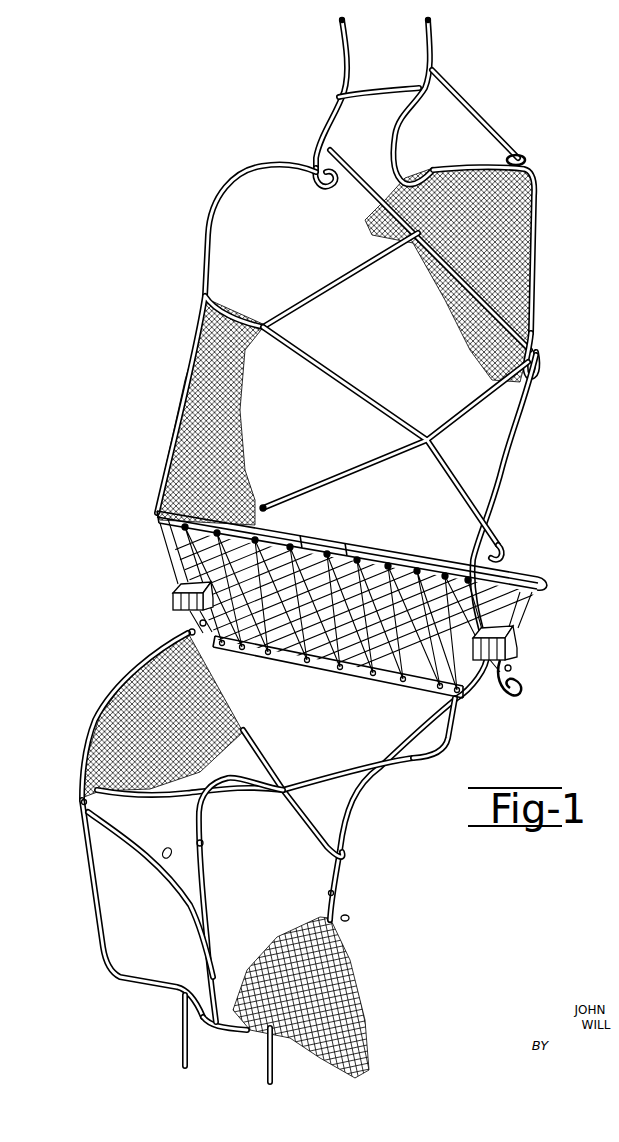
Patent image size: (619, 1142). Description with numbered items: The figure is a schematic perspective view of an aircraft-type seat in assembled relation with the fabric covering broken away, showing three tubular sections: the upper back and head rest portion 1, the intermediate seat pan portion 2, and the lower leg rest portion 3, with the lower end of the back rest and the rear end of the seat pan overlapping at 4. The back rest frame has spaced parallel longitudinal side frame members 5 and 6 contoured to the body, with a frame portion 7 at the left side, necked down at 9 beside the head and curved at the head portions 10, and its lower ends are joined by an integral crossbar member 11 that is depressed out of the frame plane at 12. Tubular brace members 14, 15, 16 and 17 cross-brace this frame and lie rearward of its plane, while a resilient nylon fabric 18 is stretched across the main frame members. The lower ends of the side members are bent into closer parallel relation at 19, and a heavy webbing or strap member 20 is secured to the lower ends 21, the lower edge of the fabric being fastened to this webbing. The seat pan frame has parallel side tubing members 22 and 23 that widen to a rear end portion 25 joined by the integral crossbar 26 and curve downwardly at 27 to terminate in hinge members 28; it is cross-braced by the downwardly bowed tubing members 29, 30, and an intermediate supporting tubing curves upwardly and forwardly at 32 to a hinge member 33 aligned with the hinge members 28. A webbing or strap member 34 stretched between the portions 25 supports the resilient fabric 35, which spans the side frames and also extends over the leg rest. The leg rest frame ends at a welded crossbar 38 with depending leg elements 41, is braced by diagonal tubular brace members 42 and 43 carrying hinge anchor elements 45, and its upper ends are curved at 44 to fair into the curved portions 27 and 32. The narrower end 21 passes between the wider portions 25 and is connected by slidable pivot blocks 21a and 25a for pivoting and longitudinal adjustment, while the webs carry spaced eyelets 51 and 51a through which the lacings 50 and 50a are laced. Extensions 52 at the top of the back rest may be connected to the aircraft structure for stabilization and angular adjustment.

The back and head rest portion 1 is at (549, 236).
The seat pan portion 2 is at (459, 723).
The leg rest portion 3 is at (368, 975).
The intersecting or overlapping relation 4 is at (504, 456).
The longitudinal side frame member 5 is at (183, 377).
The longitudinal side frame member 6 is at (505, 427).
The frame arc 7 is at (204, 277).
The necked down portion 9 is at (314, 178).
The head portion 10 is at (314, 125).
The crossbar member 11 is at (512, 680).
The depressed portion 12 is at (357, 668).
The tubular brace member 14 is at (382, 462).
The tubular brace member 15 is at (240, 472).
The tubular brace member 16 is at (340, 280).
The tubular brace member 17 is at (331, 140).
The fabric 18 is at (515, 265).
The closer parallel portion 19 is at (176, 535).
The webbing or strap member 20 is at (352, 540).
The lower end 21 is at (170, 635).
The slidable pivot block 21a is at (185, 603).
The side tubing member 22 is at (102, 702).
The side tubing member 23 is at (398, 753).
The rear end portion 25 is at (540, 590).
The slidable pivot block 25a is at (200, 615).
The crossbar 26 is at (340, 535).
The curved portion 27 is at (86, 745).
The hinge member 28 is at (80, 802).
The tubing brace member 29 is at (260, 762).
The tubing brace member 30 is at (168, 795).
The upwardly curved portion 32 is at (203, 808).
The hinge member 33 is at (206, 843).
The webbing or strap member 34 is at (292, 652).
The fabric 35 is at (195, 688).
The crossbar 38 is at (220, 1041).
The legs 41 is at (177, 1004).
The diagonal tubular brace member 42 is at (190, 905).
The diagonal tubular brace member 43 is at (289, 955).
The curved upper end 44 is at (87, 820).
The hinge anchor element 45 is at (172, 846).
The lacing 50 is at (540, 582).
The lacing 50a is at (176, 590).
The eyelet 51 is at (328, 662).
The eyelet 51a is at (408, 533).
The extension 52 is at (336, 58).